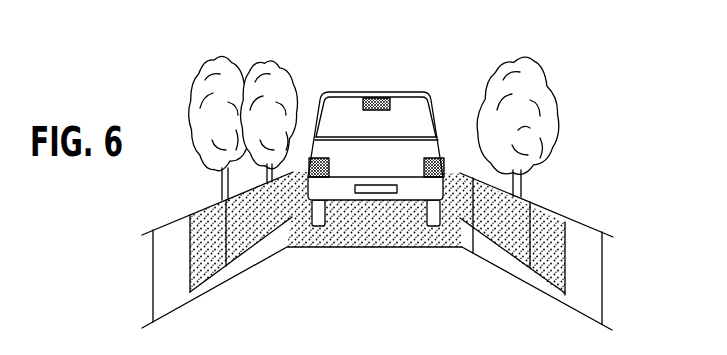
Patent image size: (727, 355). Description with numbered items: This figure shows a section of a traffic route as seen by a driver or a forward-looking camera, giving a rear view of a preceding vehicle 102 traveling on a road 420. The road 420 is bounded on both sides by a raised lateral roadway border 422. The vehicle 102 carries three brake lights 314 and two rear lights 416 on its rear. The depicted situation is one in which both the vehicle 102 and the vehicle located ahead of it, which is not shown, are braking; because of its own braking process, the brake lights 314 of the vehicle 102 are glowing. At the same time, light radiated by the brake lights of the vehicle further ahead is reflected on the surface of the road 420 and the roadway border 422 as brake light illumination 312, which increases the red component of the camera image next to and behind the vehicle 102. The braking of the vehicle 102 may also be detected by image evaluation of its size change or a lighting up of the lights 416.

The preceding vehicle 102 is at (343, 92).
The brake lights 314 is at (380, 98).
The rear lights 416 is at (445, 158).
The brake light illumination 312 is at (258, 262).
The raised lateral roadway border 422 is at (583, 222).
The road 420 is at (608, 326).